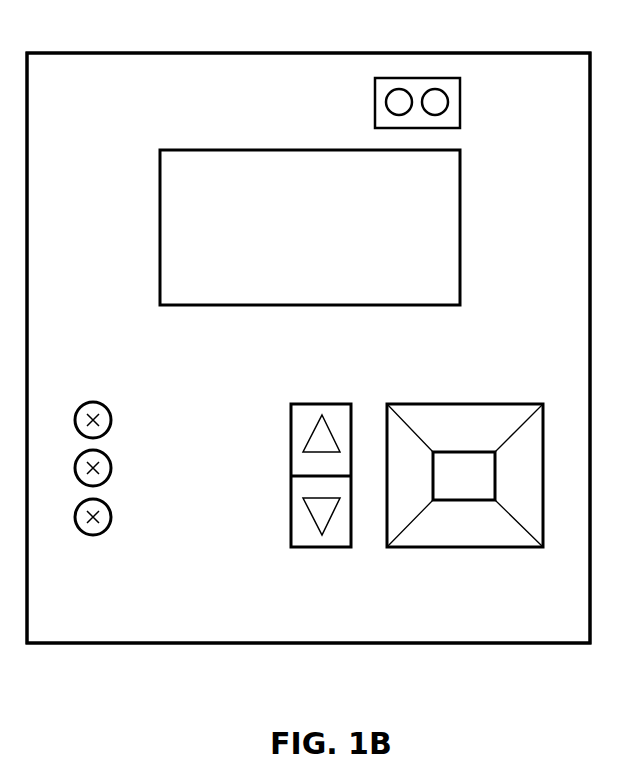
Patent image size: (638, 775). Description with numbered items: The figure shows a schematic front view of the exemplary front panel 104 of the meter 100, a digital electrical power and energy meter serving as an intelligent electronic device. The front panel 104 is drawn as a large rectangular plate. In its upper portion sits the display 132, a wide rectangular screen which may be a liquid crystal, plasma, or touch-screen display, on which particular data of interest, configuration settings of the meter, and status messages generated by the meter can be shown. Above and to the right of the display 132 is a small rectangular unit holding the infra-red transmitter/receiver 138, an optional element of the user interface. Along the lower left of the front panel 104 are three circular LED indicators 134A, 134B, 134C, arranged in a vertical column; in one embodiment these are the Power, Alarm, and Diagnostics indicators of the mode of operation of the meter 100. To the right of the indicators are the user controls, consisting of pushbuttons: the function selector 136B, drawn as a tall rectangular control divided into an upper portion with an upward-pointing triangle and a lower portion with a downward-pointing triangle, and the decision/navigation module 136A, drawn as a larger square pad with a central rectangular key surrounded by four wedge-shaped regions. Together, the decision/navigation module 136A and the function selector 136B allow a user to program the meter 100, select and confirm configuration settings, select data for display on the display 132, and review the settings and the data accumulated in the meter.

The meter 100 is at (543, 53).
The front panel 104 is at (100, 78).
The front panel display 132 is at (160, 275).
The LED indicator 134A is at (111, 421).
The LED indicator 134B is at (111, 469).
The LED indicator 134C is at (111, 518).
The decision/navigation module 136A is at (422, 547).
The function selector 136B is at (291, 524).
The infra-red transmitter/receiver 138 is at (460, 103).